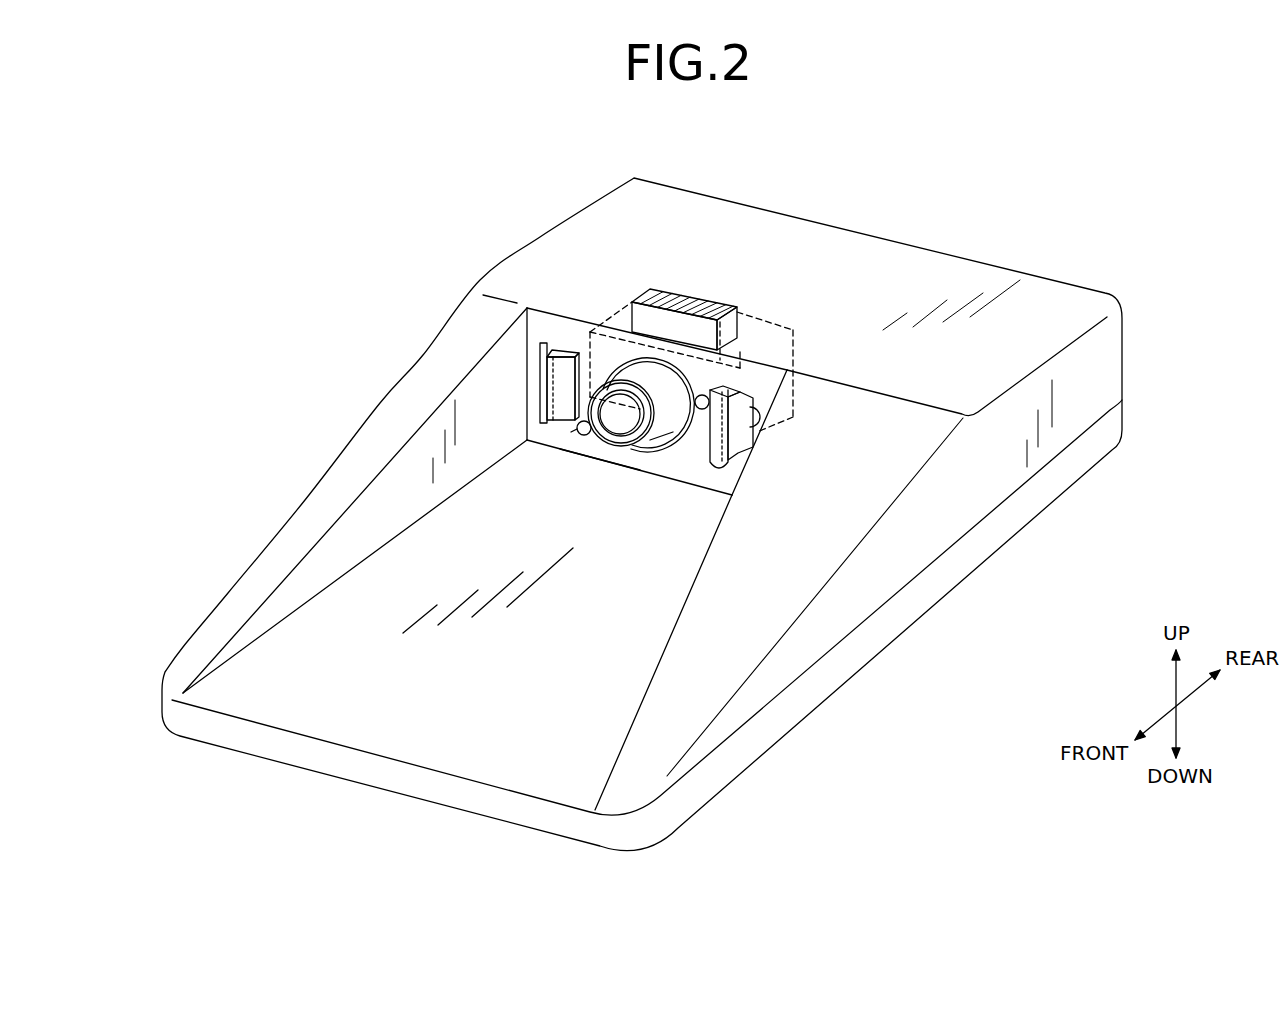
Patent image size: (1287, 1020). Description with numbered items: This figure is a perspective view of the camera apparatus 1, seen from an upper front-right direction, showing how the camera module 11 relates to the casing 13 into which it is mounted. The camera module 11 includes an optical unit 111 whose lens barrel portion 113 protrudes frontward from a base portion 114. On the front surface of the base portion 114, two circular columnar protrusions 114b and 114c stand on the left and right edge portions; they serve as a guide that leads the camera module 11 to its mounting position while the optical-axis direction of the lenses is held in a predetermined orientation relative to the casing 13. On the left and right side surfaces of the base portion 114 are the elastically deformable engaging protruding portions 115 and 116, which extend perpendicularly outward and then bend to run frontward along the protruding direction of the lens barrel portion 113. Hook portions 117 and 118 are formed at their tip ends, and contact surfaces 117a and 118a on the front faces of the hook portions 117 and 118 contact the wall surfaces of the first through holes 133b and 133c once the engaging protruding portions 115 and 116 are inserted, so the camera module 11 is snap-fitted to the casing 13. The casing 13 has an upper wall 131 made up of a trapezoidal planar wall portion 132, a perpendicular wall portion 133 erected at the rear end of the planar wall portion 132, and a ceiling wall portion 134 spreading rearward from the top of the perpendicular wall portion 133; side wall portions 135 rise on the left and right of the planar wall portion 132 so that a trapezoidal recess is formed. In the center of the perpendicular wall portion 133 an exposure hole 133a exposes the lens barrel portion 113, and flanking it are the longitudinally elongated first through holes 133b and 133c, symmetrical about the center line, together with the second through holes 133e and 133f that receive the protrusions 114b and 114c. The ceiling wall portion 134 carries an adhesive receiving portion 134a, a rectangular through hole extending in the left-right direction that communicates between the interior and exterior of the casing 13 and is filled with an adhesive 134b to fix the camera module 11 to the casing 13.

The camera apparatus 1 is at (305, 239).
The camera module 11 is at (616, 291).
The optical unit 111 is at (601, 304).
The lens barrel portion 113 is at (595, 380).
The base portion 114 is at (797, 347).
The protrusion 114b is at (592, 410).
The protrusion 114c is at (745, 358).
The engaging protruding portion 115 is at (540, 425).
The engaging protruding portion 116 is at (735, 465).
The hook portion 117 is at (547, 407).
The contact surface 117a is at (577, 428).
The hook portion 118 is at (718, 480).
The contact surface 118a is at (702, 412).
The casing 13 is at (317, 463).
The upper wall 131 is at (380, 437).
The planar wall portion 132 is at (383, 693).
The perpendicular wall portion 133 is at (697, 398).
The exposure hole 133a is at (700, 486).
The first through hole 133b is at (527, 437).
The first through hole 133c is at (763, 433).
The second through hole 133e is at (600, 452).
The second through hole 133f is at (735, 352).
The ceiling wall portion 134 is at (750, 240).
The adhesive receiving portion 134a is at (647, 288).
The adhesive 134b is at (680, 290).
The side wall portion 135 is at (290, 593).